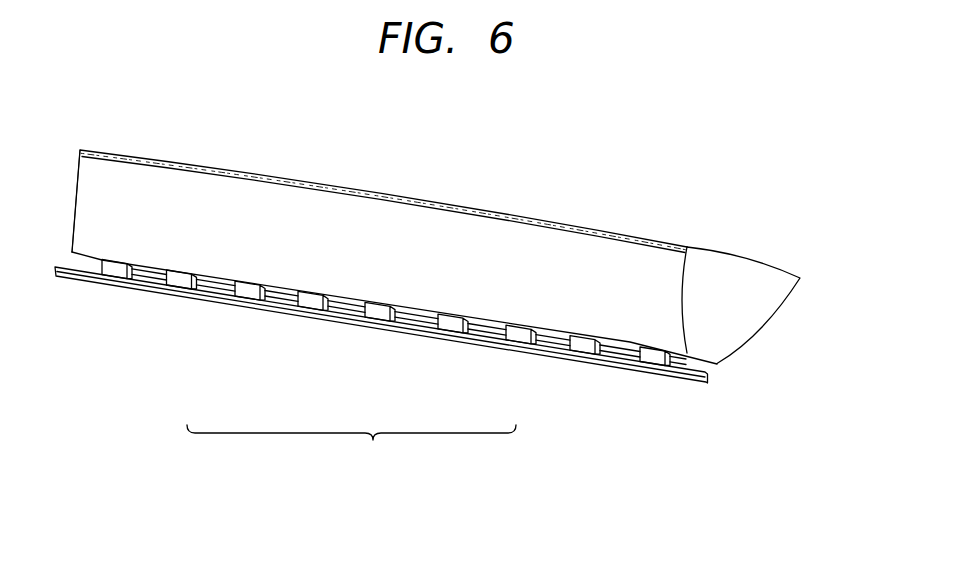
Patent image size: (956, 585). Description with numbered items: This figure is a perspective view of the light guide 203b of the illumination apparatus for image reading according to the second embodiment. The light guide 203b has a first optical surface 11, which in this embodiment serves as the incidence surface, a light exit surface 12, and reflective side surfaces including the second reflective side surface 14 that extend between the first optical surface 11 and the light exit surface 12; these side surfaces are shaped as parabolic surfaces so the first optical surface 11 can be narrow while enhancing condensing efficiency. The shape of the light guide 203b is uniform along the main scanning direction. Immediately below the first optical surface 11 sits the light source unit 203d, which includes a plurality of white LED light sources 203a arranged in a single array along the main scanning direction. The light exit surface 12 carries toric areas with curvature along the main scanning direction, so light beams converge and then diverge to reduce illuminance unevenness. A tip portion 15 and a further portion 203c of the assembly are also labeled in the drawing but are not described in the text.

The first optical surface 11 is at (685, 360).
The light exit surface 12 is at (460, 203).
The second reflective side surface 14 is at (212, 190).
The tip portion 15 is at (700, 261).
The white LED light sources 203a is at (376, 311).
The light guide 203b is at (383, 169).
The recessed portion 203c is at (415, 335).
The light source unit 203d is at (394, 363).